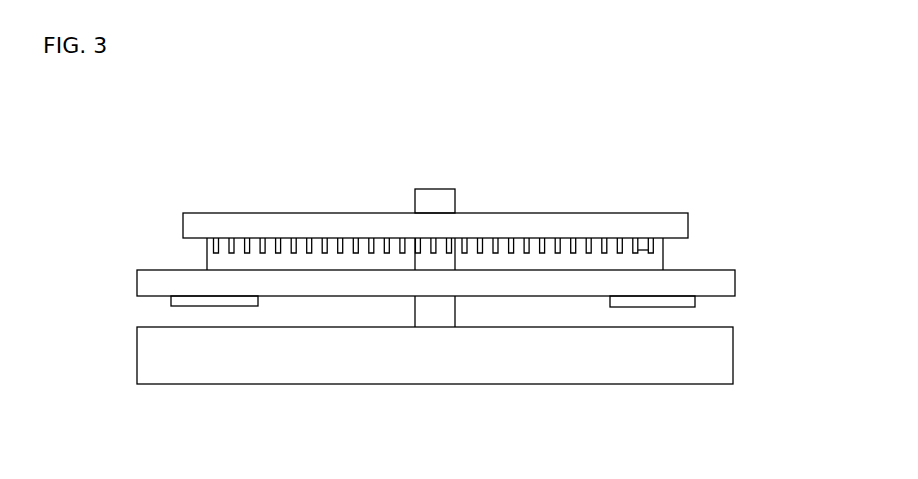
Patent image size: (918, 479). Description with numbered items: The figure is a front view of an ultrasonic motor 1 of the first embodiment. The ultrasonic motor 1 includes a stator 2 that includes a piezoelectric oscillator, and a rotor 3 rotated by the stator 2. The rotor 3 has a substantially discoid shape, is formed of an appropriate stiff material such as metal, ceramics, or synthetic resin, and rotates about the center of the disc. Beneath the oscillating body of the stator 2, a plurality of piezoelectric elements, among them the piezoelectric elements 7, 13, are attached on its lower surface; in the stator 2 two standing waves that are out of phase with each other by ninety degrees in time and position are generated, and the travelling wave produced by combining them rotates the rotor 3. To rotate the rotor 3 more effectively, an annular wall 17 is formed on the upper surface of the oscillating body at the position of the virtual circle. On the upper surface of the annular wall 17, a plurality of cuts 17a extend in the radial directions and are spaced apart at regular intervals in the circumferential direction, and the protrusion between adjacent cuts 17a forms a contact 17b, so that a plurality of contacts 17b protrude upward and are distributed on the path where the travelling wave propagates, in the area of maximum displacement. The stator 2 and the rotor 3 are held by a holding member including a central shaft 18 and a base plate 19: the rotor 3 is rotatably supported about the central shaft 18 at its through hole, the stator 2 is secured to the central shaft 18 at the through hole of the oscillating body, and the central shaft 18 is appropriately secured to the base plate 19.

The ultrasonic motor 1 is at (199, 144).
The stator 2 is at (134, 268).
The rotor 3 is at (296, 202).
The piezoelectric element 7 is at (683, 307).
The piezoelectric element 13 is at (233, 306).
The annular wall 17 is at (521, 298).
The cut 17a is at (652, 243).
The contact 17b is at (644, 240).
The central shaft 18 is at (438, 189).
The base plate 19 is at (505, 384).